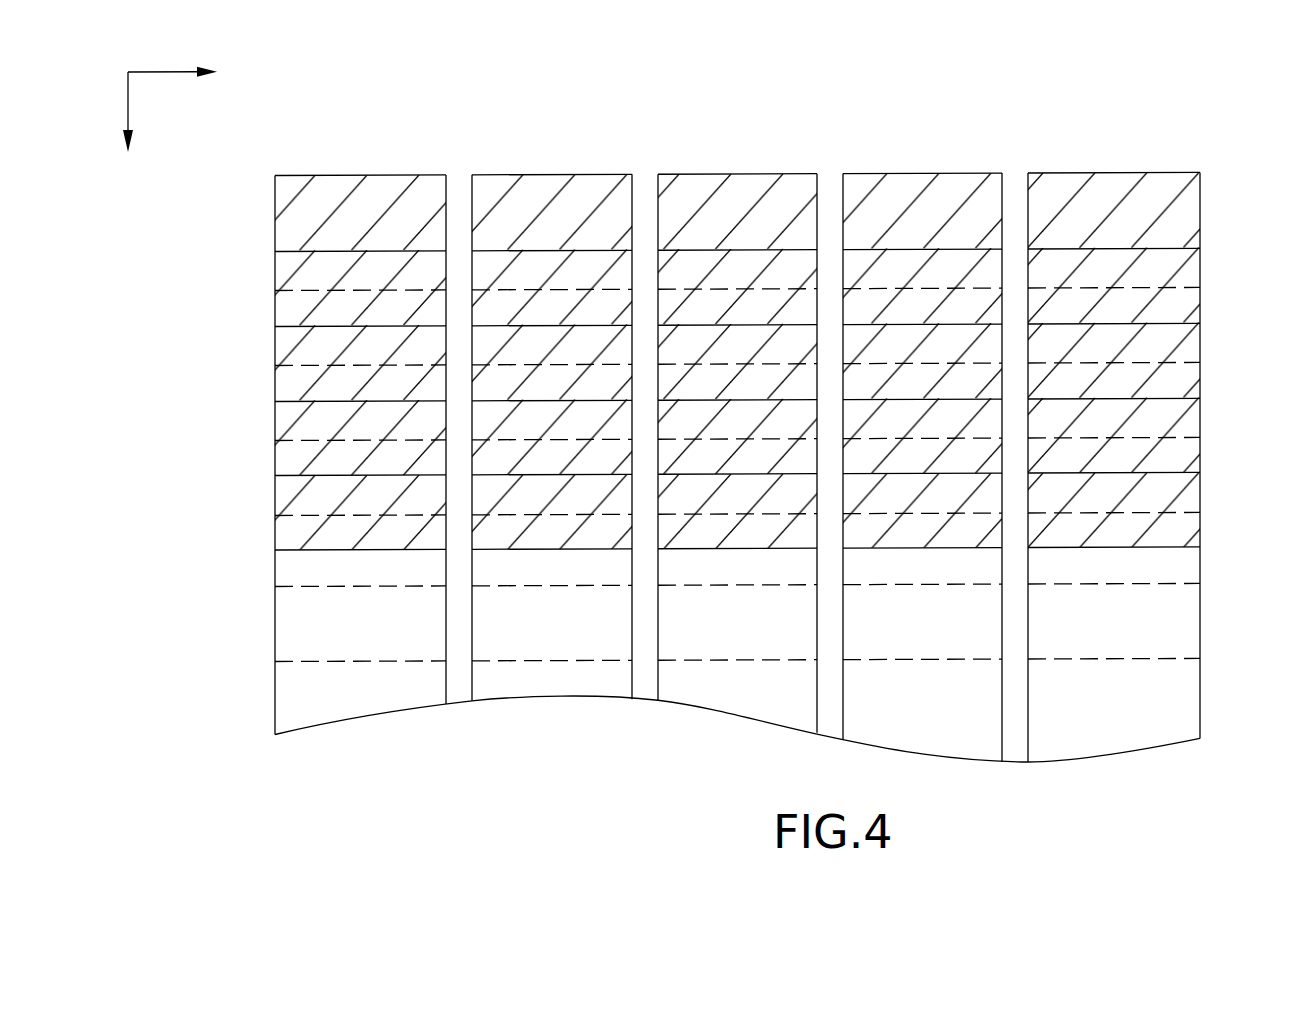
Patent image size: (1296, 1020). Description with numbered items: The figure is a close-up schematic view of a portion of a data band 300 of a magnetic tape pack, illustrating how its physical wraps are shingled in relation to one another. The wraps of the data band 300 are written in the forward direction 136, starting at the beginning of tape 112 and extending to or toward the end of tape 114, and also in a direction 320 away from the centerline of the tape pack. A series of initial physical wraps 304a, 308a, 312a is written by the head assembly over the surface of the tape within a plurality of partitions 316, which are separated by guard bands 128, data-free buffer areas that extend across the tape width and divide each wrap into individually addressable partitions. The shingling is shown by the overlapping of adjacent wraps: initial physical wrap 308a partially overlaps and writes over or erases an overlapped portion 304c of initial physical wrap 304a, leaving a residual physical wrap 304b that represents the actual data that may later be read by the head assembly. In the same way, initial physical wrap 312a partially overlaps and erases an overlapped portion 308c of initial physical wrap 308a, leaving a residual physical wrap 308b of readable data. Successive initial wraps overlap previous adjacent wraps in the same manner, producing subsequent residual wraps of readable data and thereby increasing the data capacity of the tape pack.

The forward direction 136 is at (168, 70).
The direction away from the centerline 320 is at (127, 97).
The beginning of tape 112 is at (277, 152).
The end of tape 114 is at (1201, 147).
The guard bands 128 is at (461, 690).
The data band 300 is at (1134, 126).
The initial physical wrap 304a is at (275, 177).
The residual physical wrap 304b is at (1205, 174).
The overlapped portion 304c is at (306, 274).
The initial physical wrap 308a is at (258, 283).
The residual physical wrap 308b is at (1205, 250).
The overlapped portion 308c is at (302, 356).
The initial physical wrap 312a is at (275, 328).
The partitions 316 is at (410, 268).